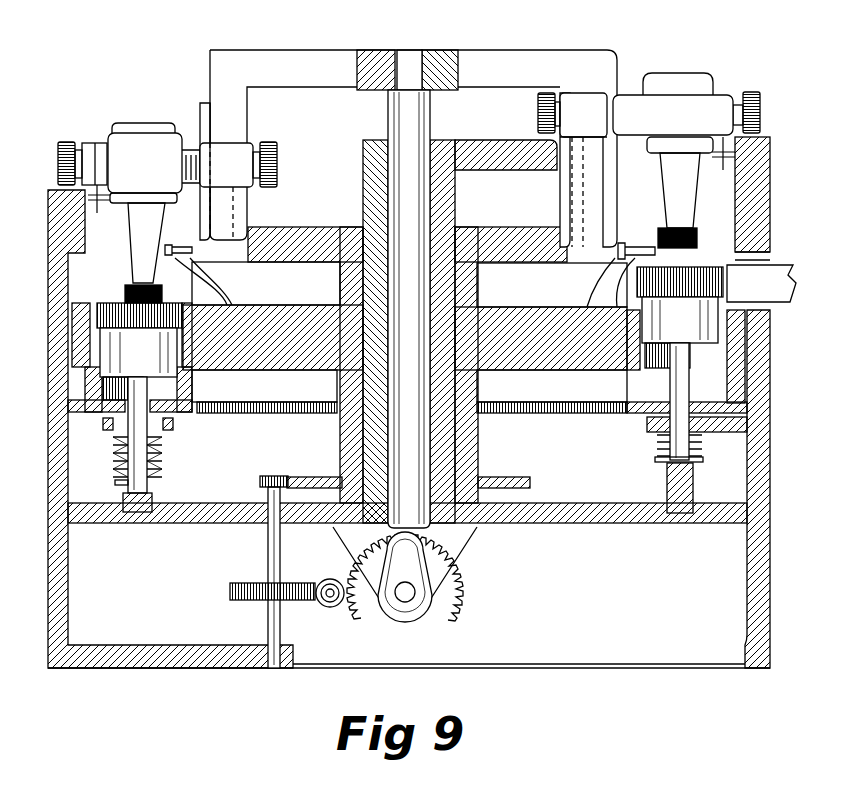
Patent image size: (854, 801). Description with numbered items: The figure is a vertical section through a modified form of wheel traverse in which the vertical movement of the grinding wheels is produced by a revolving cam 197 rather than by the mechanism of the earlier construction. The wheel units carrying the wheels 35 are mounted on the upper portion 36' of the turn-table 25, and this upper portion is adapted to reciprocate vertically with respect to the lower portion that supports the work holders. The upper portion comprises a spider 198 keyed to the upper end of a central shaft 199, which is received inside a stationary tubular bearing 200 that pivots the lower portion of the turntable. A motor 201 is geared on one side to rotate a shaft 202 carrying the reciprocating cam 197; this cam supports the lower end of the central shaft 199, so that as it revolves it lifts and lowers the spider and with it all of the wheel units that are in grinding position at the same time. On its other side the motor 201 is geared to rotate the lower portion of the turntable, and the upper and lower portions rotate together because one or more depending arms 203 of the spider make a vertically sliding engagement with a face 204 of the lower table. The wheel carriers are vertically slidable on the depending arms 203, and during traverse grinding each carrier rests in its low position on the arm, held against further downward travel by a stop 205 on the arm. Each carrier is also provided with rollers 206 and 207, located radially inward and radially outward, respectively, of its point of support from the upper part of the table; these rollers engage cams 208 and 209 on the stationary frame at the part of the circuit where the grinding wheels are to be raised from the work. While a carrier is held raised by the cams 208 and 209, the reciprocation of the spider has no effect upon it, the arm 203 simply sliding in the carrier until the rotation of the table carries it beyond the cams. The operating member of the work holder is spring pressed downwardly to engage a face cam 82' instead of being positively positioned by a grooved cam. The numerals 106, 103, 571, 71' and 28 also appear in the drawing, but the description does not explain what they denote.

The upper portion of the turntable 36' is at (390, 51).
The spider 198 is at (512, 58).
The central shaft 199 is at (418, 123).
The roller 207 is at (273, 160).
The cam 209 is at (562, 134).
The roller 206 is at (66, 142).
The knurled knob 106 is at (773, 110).
The cam 208 is at (768, 148).
The pin 103 is at (240, 130).
The depending arm 203 is at (577, 192).
The stationary tubular bearing 200 is at (457, 208).
The stop 205 is at (203, 235).
The face of the lower table 204 is at (238, 258).
The block 571 is at (270, 313).
The wheel 35 is at (125, 288).
The turn-table 25 is at (520, 370).
The collar 71' is at (154, 451).
The face cam 82' is at (160, 444).
The revolving cam 197 is at (405, 575).
The shaft 202 is at (412, 593).
The motor 201 is at (317, 625).
The partition plate 28 is at (608, 524).